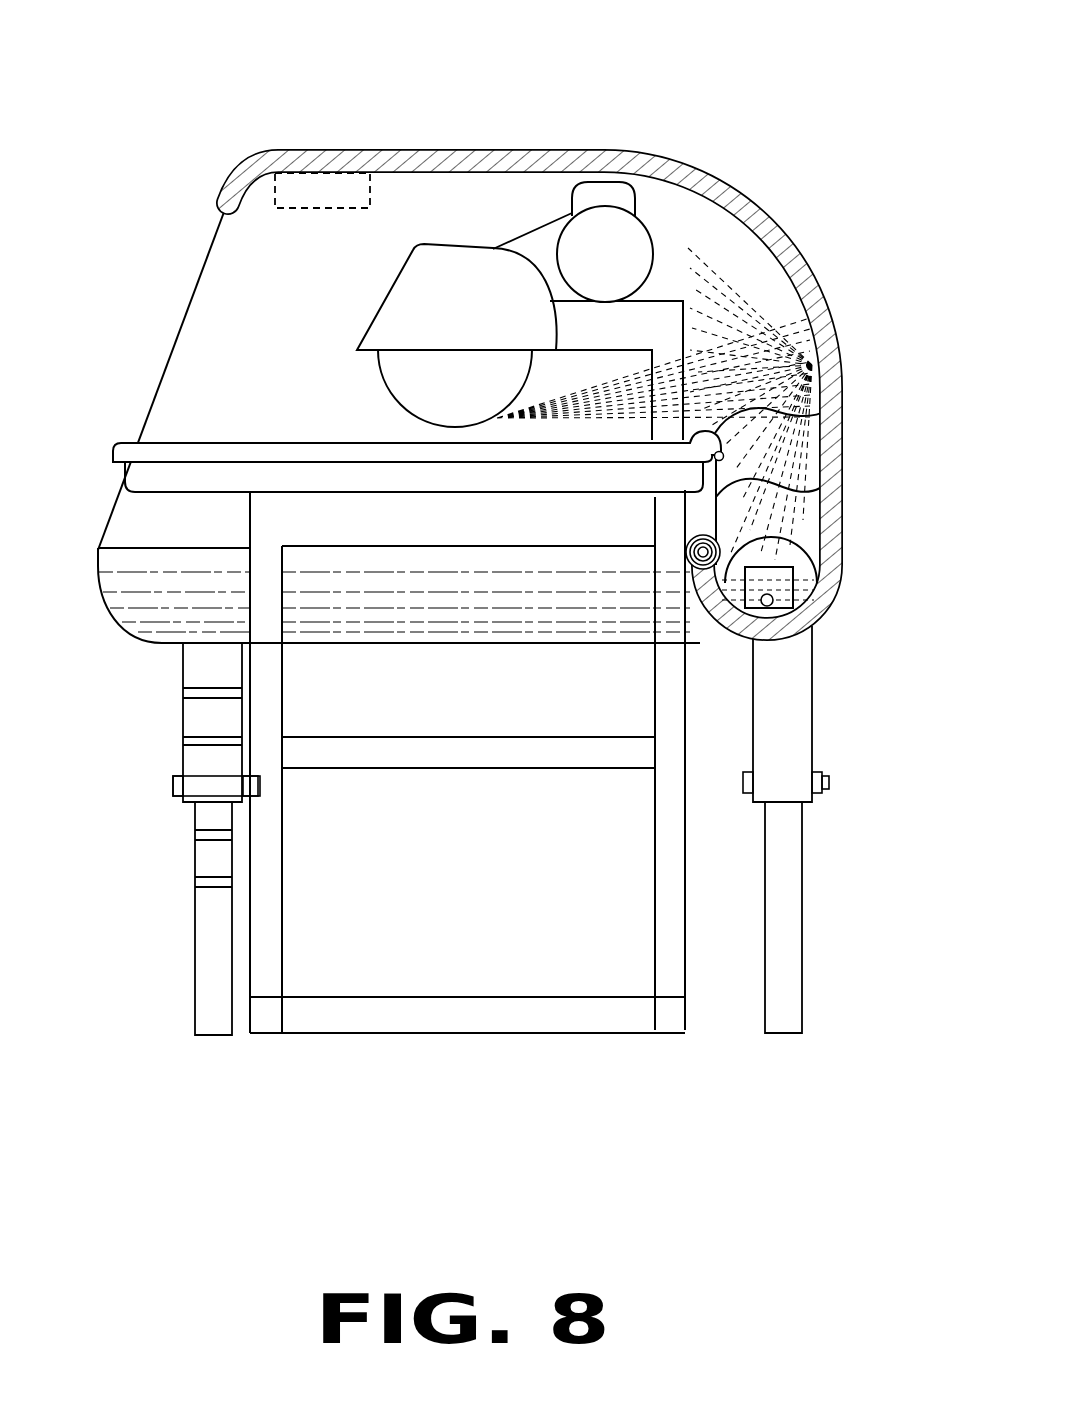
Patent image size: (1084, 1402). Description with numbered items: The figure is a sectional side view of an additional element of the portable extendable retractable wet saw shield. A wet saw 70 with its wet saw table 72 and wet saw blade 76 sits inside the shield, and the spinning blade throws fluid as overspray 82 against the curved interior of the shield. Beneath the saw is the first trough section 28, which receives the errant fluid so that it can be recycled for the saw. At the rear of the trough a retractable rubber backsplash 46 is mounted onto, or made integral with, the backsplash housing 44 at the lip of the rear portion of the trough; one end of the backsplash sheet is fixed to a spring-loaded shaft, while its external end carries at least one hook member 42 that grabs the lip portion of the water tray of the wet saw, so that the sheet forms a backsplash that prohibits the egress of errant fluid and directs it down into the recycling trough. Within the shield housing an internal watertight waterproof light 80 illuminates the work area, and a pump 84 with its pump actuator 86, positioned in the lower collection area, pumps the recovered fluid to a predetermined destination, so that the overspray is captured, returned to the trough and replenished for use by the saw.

The first trough section 28 is at (140, 610).
The exterior wall of shield 42 is at (828, 410).
The backsplash housing 44 is at (838, 580).
The backsplash 46 is at (820, 488).
The wet saw 70 is at (423, 301).
The wet saw table 72 is at (223, 443).
The wet saw blade 76 is at (440, 375).
The waterproof light 80 is at (302, 193).
The overspray 82 is at (778, 341).
The pump 84 is at (790, 578).
The pump actuator 86 is at (765, 606).